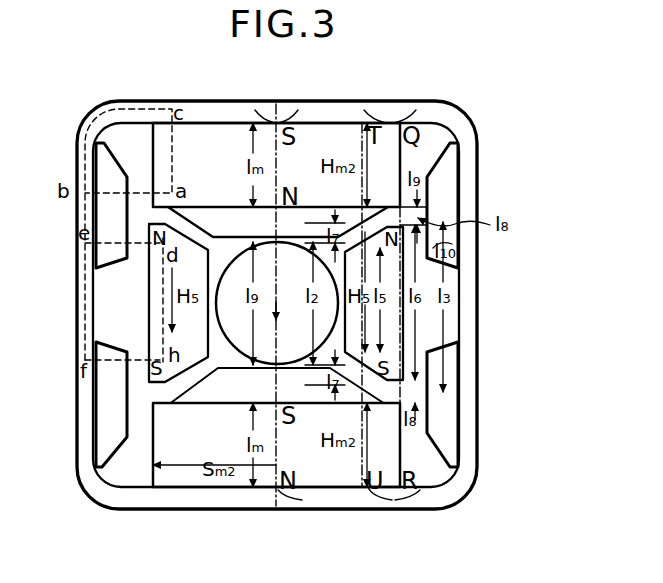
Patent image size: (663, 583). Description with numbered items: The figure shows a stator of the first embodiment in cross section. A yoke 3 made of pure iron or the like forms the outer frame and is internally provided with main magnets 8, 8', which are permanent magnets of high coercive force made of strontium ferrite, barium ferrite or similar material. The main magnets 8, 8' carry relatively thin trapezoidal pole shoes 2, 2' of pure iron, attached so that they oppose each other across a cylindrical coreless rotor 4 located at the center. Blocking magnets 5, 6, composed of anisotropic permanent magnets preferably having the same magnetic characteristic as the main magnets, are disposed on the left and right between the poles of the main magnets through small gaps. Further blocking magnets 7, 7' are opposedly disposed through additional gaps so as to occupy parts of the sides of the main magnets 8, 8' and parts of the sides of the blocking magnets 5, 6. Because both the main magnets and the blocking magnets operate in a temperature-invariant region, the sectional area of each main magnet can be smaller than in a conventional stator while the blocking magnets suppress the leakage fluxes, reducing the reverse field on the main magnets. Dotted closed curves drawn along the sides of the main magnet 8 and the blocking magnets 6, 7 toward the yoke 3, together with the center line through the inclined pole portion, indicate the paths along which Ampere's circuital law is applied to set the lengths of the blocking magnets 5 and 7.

The pole shoe 2 is at (278, 207).
The pole shoe 2' is at (277, 400).
The yoke 3 is at (466, 312).
The cylindrical coreless rotor 4 is at (247, 263).
The blocking magnet 5 is at (397, 330).
The blocking magnet 6 is at (198, 346).
The blocking magnet 7 is at (274, 205).
The blocking magnet 7' is at (278, 405).
The main magnet 8 is at (276, 140).
The main magnet 8' is at (276, 476).